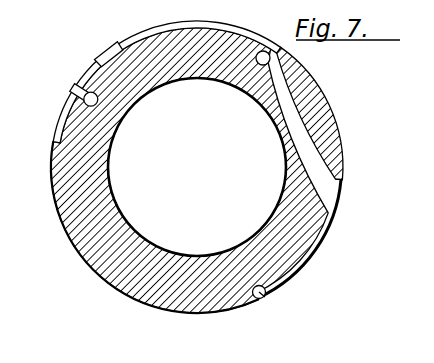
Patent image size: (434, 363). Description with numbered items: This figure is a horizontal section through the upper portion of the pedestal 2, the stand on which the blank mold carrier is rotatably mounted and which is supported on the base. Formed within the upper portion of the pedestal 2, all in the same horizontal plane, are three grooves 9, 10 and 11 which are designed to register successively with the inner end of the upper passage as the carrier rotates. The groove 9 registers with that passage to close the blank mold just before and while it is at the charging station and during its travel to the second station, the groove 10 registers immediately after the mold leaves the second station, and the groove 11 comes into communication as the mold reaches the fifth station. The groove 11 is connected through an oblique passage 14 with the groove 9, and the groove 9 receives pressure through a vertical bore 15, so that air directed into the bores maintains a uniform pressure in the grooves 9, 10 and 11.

The pedestal 2 is at (102, 258).
The groove 9 is at (249, 35).
The groove 10 is at (90, 78).
The groove 11 is at (305, 258).
The oblique passage 14 is at (390, 144).
The vertical bore 15 is at (274, 58).